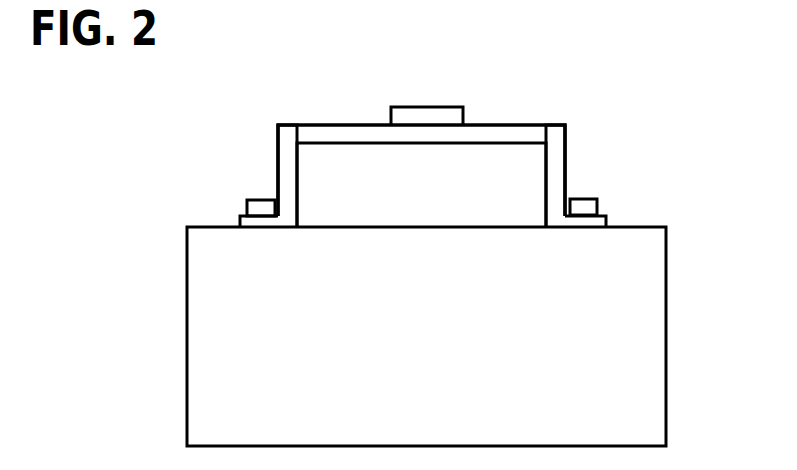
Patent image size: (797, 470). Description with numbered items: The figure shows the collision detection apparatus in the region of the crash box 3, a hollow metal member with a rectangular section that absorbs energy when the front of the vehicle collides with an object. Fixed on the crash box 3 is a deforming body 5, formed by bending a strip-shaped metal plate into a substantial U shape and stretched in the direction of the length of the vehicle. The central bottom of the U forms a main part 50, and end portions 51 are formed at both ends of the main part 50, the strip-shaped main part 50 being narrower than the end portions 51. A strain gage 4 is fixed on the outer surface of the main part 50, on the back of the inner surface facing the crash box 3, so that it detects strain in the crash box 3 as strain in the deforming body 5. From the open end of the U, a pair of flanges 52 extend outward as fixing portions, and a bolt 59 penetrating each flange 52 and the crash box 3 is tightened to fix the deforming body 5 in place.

The crash box 3 is at (650, 324).
The strain gage 4 is at (437, 108).
The deforming body 5 is at (578, 88).
The main part 50 is at (497, 137).
The end portion 51 is at (287, 158).
The flange 52 is at (252, 223).
The bolt 59 is at (257, 205).